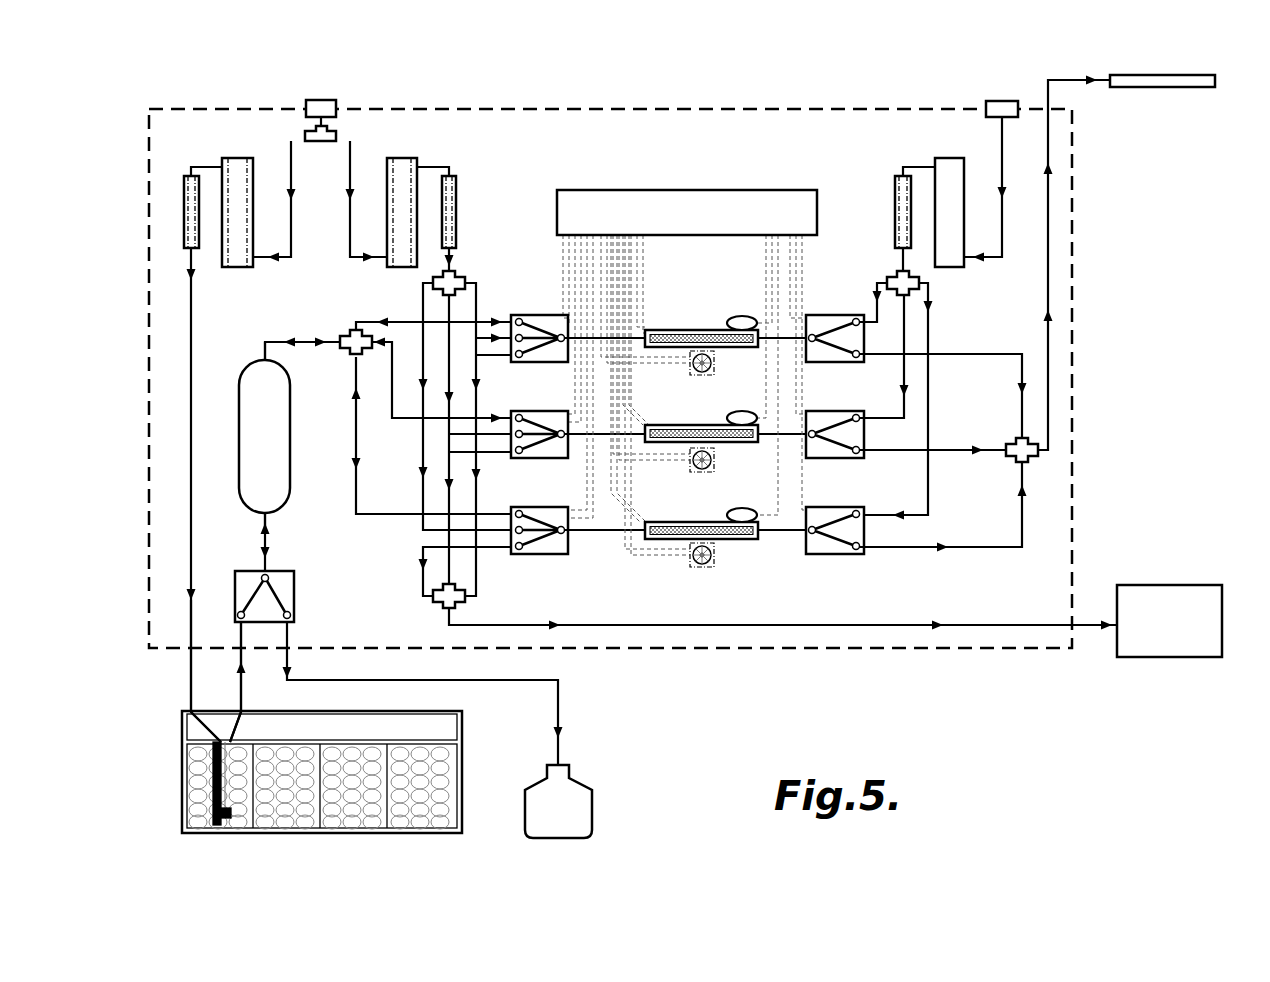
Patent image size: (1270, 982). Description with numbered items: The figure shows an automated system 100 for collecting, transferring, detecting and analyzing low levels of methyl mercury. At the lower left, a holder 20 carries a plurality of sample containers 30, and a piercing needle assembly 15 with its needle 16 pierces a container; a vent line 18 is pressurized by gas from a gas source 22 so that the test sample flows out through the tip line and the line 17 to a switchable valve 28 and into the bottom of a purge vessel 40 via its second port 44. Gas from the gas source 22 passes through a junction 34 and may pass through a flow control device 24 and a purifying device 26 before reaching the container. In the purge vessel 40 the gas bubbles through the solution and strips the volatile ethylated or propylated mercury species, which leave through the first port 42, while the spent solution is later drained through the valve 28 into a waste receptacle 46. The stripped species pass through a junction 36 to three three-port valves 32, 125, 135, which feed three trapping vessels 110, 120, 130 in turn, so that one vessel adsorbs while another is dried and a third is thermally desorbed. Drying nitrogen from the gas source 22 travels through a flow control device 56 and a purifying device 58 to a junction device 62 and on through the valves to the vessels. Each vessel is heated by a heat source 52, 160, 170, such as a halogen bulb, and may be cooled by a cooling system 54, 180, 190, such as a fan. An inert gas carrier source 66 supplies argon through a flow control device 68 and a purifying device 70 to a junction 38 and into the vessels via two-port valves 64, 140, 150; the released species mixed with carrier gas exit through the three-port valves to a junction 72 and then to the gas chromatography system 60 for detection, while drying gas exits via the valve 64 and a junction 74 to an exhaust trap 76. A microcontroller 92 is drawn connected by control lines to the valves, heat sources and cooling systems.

The piercing needle assembly 15 is at (207, 778).
The needle 16 is at (229, 820).
The sample line 17 is at (250, 720).
The vent line 18 is at (199, 722).
The holder 20 is at (322, 784).
The gas source 22 is at (306, 108).
The flow control device 24 is at (228, 158).
The purifying device 26 is at (184, 198).
The switchable valve 28 is at (294, 592).
The sample container 30 is at (280, 795).
The first valve system 32 is at (525, 315).
The junction 34 is at (338, 133).
The junction 36 is at (342, 337).
The junction 38 is at (887, 278).
The purge vessel 40 is at (290, 440).
The first port 42 is at (265, 358).
The second port 44 is at (270, 516).
The waste receptacle 46 is at (578, 782).
The first heat source 52 is at (742, 316).
The cooling system 54 is at (690, 366).
The flow control device 56 is at (400, 158).
The purifying device 58 is at (456, 192).
The gas chromatography system 60 is at (1205, 585).
The junction device 62 is at (460, 273).
The two-port valve 64 is at (848, 362).
The inert gas carrier source 66 is at (988, 102).
The flow control device 68 is at (958, 158).
The purifying device 70 is at (895, 200).
The junction 72 is at (436, 606).
The junction 74 is at (1012, 440).
The exhaust trap 76 is at (1192, 87).
The microcontroller 92 is at (630, 190).
The automated system 100 is at (1103, 697).
The first trapping vessel 110 is at (700, 330).
The second trapping vessel 120 is at (700, 425).
The three-port valve 125 is at (525, 411).
The third trapping vessel 130 is at (700, 522).
The three-port valve 135 is at (527, 507).
The two-port valve 140 is at (848, 458).
The two-port valve 150 is at (848, 555).
The second heat source 160 is at (742, 411).
The third heat source 170 is at (742, 508).
The cooling system 180 is at (690, 462).
The cooling system 190 is at (690, 566).